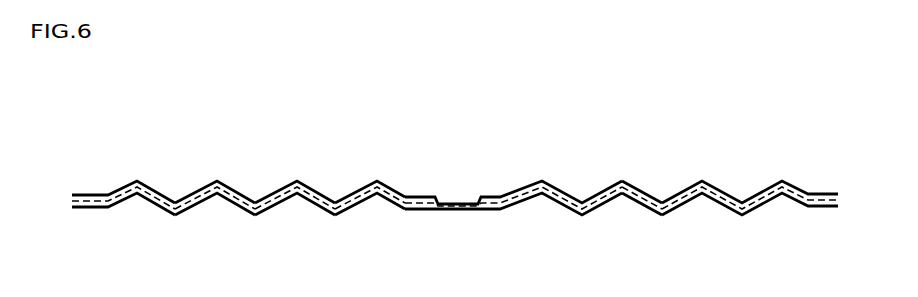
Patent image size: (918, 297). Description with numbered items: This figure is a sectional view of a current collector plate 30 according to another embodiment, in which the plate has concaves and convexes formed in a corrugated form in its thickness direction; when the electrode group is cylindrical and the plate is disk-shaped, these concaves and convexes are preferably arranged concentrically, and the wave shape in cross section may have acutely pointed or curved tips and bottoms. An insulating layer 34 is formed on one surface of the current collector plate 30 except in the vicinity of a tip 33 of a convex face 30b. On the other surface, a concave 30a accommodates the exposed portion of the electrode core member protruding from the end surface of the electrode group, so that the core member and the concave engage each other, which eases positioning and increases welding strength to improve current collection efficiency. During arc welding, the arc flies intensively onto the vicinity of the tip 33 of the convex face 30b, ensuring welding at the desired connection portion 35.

The current collector plate 30 is at (508, 146).
The concave 30a is at (333, 228).
The convex face 30b is at (413, 158).
The tip 33 is at (212, 177).
The insulating layer 34 is at (648, 183).
The connection portion 35 is at (214, 201).